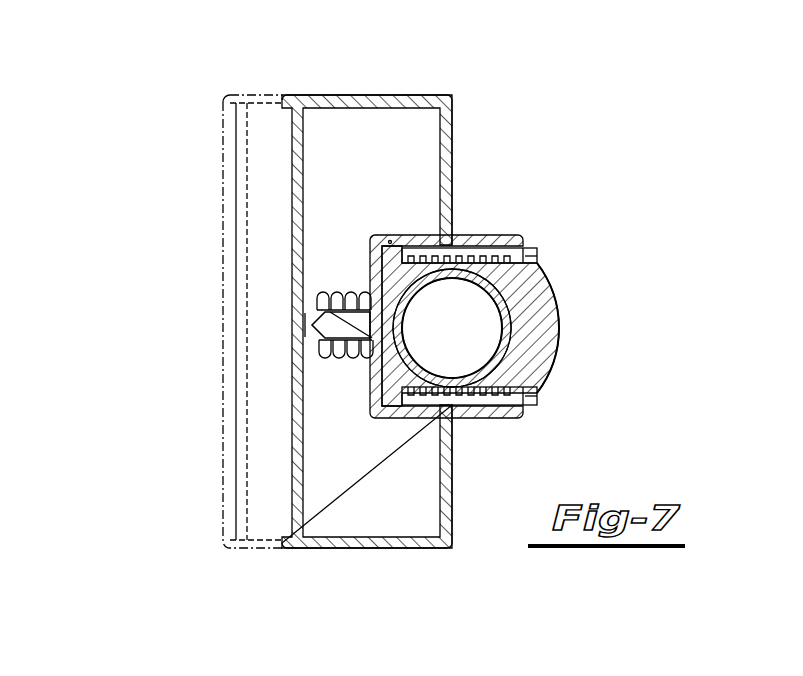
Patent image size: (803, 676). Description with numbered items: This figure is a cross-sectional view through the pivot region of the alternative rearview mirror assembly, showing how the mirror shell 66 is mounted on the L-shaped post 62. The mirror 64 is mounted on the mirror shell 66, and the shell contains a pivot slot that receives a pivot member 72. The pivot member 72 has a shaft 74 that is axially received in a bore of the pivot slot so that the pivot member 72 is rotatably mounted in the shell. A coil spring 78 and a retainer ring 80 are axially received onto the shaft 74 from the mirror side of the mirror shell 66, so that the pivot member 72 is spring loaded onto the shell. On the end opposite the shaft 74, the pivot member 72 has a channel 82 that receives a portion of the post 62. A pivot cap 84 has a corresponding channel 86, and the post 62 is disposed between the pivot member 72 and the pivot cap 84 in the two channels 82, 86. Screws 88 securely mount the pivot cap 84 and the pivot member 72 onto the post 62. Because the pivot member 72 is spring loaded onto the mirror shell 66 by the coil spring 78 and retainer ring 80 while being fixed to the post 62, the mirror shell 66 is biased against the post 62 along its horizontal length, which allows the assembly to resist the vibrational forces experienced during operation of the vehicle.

The L-shaped post 62 is at (545, 305).
The mirror 64 is at (292, 143).
The mirror shell 66 is at (373, 95).
The pivot member 72 is at (385, 420).
The shaft 74 is at (315, 324).
The coil spring 78 is at (372, 358).
The retainer ring 80 is at (320, 353).
The channel 82 is at (390, 240).
The pivot cap 84 is at (553, 360).
The channel 86 is at (464, 285).
The screws 88 is at (540, 257).